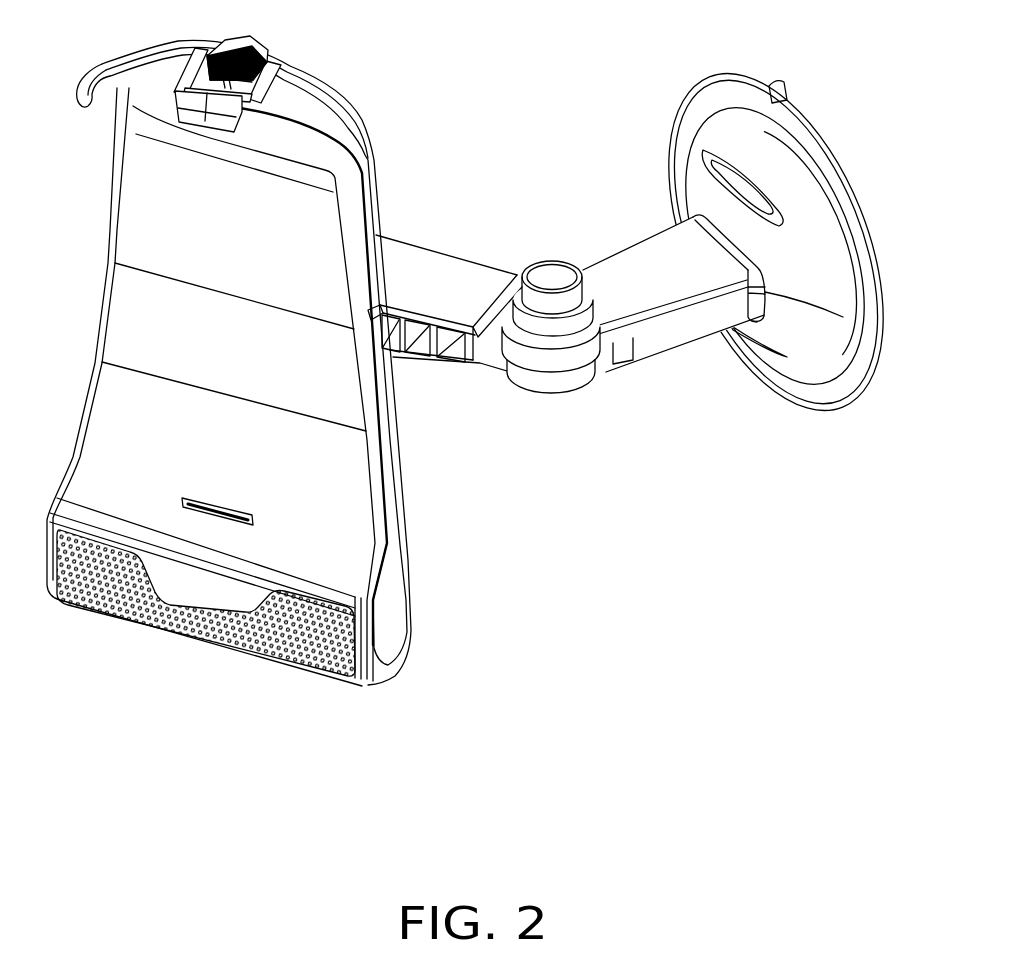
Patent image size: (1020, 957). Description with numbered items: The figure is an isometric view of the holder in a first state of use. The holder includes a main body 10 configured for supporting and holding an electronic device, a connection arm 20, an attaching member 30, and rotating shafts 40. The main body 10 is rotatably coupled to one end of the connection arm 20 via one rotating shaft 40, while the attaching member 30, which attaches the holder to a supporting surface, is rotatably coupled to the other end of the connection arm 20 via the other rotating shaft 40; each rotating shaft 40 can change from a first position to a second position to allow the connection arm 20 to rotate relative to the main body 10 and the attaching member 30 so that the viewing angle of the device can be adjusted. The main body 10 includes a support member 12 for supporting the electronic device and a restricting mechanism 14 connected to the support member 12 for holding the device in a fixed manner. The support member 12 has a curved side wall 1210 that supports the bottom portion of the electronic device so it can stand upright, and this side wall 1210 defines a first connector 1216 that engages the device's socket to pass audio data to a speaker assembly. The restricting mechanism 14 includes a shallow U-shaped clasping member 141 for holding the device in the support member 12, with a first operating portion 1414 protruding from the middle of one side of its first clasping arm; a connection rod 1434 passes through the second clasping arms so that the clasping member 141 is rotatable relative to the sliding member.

The main body 10 is at (352, 68).
The support member 12 is at (343, 443).
The restricting mechanism 14 is at (362, 108).
The connection arm 20 is at (422, 268).
The attaching member 30 is at (657, 252).
The rotating shaft 40 is at (543, 273).
The clasping member 141 is at (87, 78).
The side wall 1210 is at (333, 543).
The first connector 1216 is at (255, 514).
The first operating portion 1414 is at (190, 107).
The connection rod 1434 is at (236, 47).